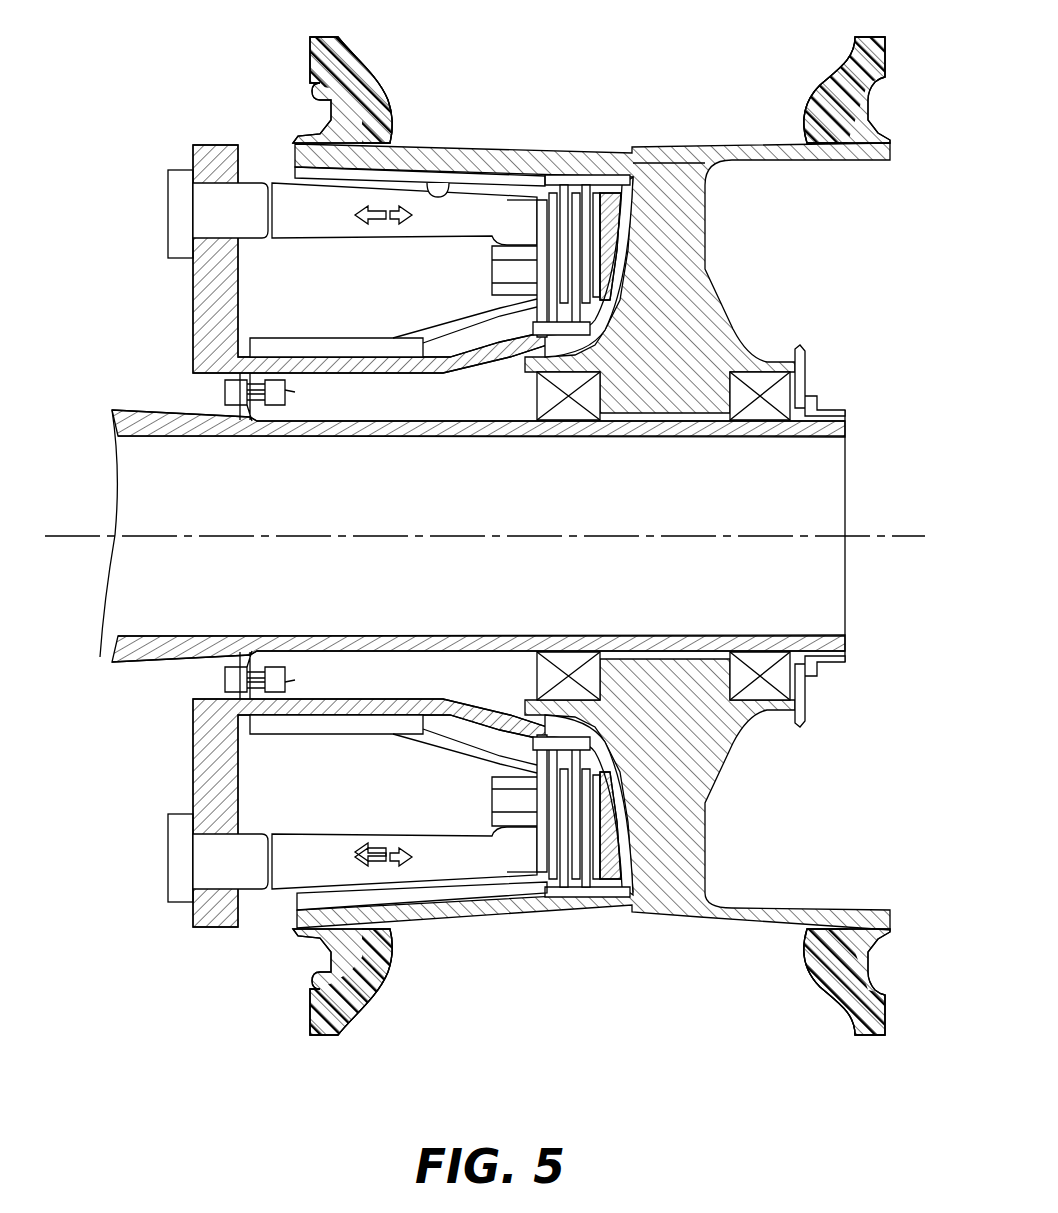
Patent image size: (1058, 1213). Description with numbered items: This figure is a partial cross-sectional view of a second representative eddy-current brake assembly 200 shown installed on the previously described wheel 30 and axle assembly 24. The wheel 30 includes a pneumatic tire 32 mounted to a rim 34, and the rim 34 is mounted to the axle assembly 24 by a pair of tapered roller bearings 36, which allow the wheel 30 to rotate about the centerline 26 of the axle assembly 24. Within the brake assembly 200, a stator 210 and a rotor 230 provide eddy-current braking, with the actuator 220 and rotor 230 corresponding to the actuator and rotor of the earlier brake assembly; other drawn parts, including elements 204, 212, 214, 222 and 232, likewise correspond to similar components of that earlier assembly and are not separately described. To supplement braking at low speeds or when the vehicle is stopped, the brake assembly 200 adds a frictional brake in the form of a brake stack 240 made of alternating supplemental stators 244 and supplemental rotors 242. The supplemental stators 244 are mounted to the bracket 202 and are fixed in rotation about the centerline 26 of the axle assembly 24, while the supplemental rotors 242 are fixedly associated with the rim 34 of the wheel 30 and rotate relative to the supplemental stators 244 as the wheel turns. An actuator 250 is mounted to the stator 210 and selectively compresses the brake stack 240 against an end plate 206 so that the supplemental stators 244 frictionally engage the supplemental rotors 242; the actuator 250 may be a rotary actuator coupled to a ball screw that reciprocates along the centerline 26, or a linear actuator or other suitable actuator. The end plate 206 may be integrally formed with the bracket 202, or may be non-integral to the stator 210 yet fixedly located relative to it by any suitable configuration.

The brake assembly 200 is at (231, 90).
The bracket 202 is at (192, 303).
The guide bar 204 is at (323, 352).
The end plate 206 is at (626, 200).
The stator 210 is at (442, 326).
The piston 212 is at (403, 228).
The clutch carrier 214 is at (546, 175).
The actuator 220 is at (175, 212).
The bolt 222 is at (257, 180).
The rotor 230 is at (481, 178).
The pin 232 is at (447, 186).
The brake stack 240 is at (547, 216).
The supplemental rotors 242 is at (586, 185).
The supplemental stators 244 is at (580, 320).
The actuator 250 is at (497, 268).
The axle assembly 24 is at (180, 662).
The centerline 26 is at (880, 530).
The wheel 30 is at (905, 82).
The pneumatic tire 32 is at (892, 40).
The rim 34 is at (738, 320).
The tapered roller bearings 36 is at (600, 428).